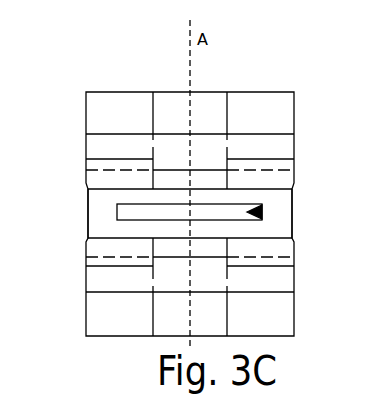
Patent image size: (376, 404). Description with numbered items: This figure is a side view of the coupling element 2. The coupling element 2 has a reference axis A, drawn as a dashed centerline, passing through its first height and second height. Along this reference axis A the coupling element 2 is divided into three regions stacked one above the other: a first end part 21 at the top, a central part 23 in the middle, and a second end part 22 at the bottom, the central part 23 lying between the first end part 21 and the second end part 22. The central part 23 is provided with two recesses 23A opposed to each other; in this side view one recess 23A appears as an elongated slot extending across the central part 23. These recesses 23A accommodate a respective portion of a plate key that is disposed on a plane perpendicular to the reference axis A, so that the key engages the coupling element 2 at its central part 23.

The coupling element 2 is at (285, 82).
The first end part 21 is at (53, 90).
The second end part 22 is at (53, 290).
The central part 23 is at (179, 214).
The recess 23A is at (257, 214).